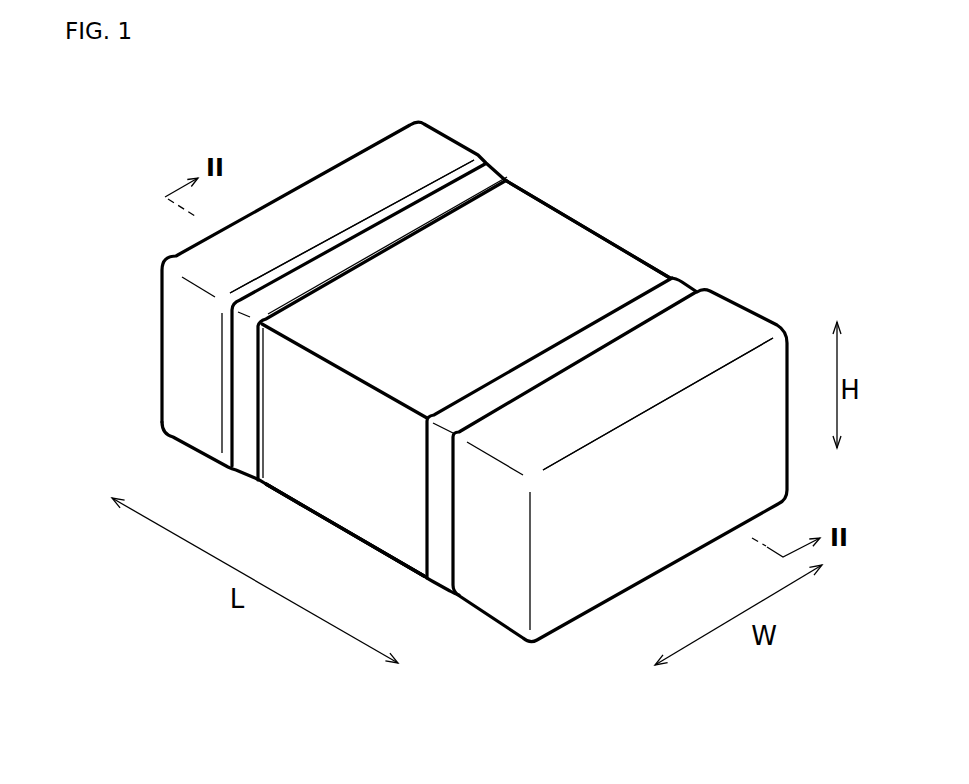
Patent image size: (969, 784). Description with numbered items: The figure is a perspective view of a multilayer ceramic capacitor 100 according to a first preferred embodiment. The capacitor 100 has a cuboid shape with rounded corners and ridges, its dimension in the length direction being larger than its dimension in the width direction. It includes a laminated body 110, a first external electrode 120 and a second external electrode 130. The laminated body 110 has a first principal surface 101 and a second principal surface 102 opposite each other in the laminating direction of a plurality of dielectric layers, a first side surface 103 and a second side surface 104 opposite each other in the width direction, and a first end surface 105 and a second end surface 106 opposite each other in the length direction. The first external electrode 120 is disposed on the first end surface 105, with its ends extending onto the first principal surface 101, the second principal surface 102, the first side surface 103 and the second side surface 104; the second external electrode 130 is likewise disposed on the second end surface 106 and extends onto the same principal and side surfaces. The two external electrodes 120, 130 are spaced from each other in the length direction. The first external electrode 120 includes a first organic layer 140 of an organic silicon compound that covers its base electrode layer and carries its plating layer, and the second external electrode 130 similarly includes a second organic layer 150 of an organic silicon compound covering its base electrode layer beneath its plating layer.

The multilayer ceramic capacitor 100 is at (540, 128).
The first principal surface 101 is at (558, 240).
The second principal surface 102 is at (382, 545).
The first side surface 103 is at (613, 245).
The second side surface 104 is at (342, 503).
The first end surface 105 is at (319, 204).
The second end surface 106 is at (600, 562).
The laminated body 110 is at (284, 492).
The first external electrode 120 is at (177, 254).
The second external electrode 130 is at (746, 477).
The first organic layer 140 is at (245, 420).
The second organic layer 150 is at (443, 572).